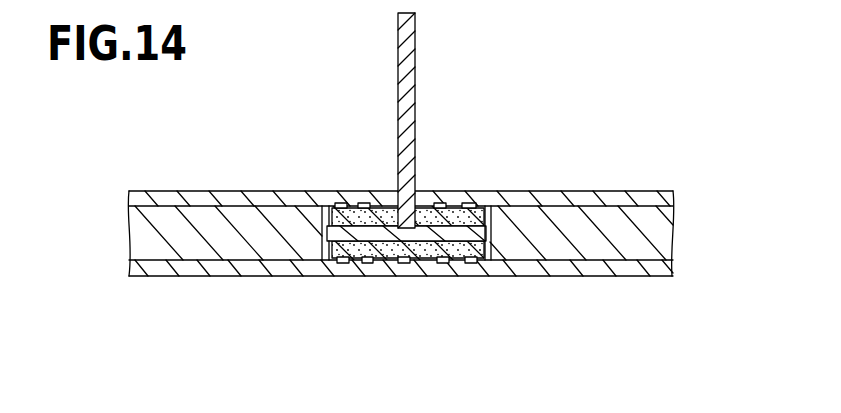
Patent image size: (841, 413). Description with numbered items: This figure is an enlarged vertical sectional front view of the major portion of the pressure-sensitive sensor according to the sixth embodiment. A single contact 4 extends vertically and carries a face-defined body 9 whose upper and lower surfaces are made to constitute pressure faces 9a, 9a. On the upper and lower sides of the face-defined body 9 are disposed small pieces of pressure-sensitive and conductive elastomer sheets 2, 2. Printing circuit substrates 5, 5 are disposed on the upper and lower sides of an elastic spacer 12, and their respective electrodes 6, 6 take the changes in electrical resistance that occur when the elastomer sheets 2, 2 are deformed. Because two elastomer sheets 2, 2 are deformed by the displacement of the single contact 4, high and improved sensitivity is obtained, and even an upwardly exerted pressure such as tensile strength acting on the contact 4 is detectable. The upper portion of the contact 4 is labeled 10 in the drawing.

The pressure-sensitive and conductive elastomer sheet 2 is at (491, 212).
The contact 4 is at (418, 121).
The printing circuit substrate 5 is at (668, 192).
The electrode 6 is at (366, 203).
The face-defined body 9 is at (315, 215).
The pressure face 9a is at (496, 232).
The lead wire 10 is at (439, 120).
The spacer 12 is at (137, 240).